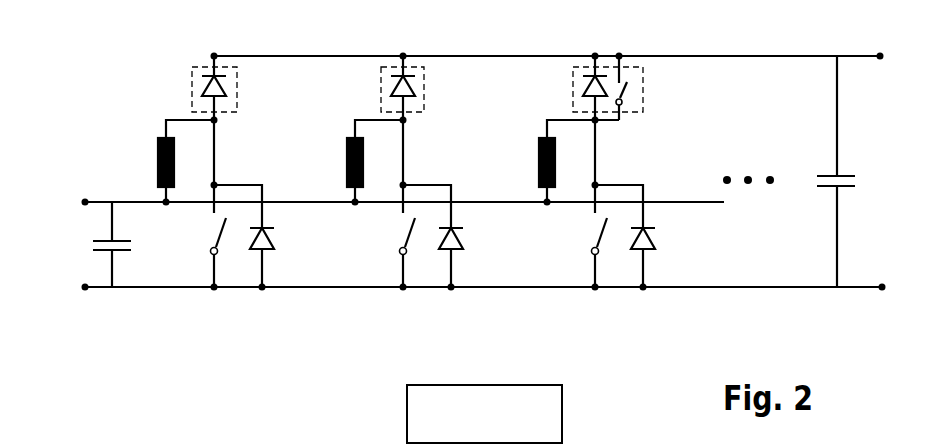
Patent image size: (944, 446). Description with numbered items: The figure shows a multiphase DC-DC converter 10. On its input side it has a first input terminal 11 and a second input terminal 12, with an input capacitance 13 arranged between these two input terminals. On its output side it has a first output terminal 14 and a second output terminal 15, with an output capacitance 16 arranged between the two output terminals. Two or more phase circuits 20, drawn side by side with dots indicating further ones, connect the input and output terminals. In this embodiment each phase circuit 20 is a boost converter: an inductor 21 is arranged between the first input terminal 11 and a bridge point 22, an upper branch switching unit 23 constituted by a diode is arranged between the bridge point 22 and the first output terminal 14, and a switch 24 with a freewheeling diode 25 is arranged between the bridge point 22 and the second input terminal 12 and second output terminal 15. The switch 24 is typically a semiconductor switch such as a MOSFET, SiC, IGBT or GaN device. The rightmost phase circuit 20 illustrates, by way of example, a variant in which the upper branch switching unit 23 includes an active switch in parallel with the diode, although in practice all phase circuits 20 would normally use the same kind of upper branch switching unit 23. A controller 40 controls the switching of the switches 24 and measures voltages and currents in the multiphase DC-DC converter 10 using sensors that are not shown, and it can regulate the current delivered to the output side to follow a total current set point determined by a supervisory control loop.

The multiphase DC-DC converter 10 is at (133, 34).
The first input terminal 11 is at (85, 201).
The second input terminal 12 is at (85, 290).
The input capacitance 13 is at (93, 246).
The first output terminal 14 is at (880, 56).
The second output terminal 15 is at (882, 290).
The output capacitance 16 is at (840, 176).
The phase circuit 20 is at (150, 308).
The inductor 21 is at (158, 140).
The bridge point 22 is at (216, 176).
The upper branch switching unit 23 is at (238, 100).
The switch 24 is at (215, 228).
The freewheeling diode 25 is at (270, 250).
The controller 40 is at (522, 420).